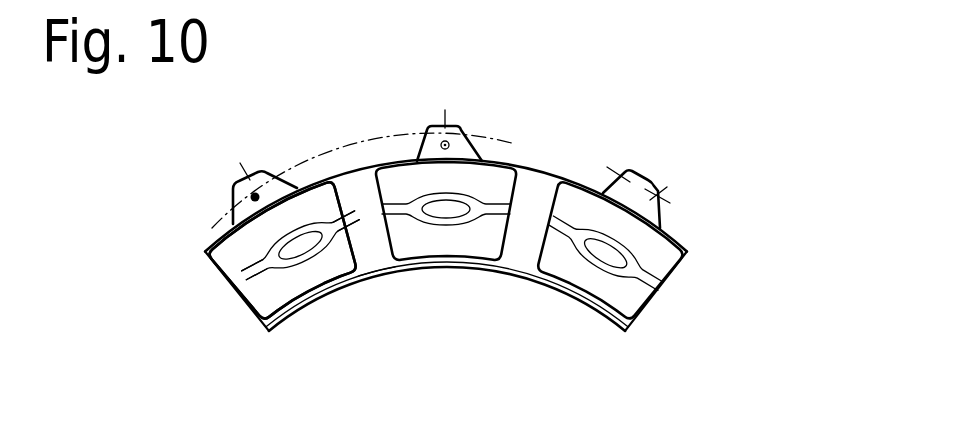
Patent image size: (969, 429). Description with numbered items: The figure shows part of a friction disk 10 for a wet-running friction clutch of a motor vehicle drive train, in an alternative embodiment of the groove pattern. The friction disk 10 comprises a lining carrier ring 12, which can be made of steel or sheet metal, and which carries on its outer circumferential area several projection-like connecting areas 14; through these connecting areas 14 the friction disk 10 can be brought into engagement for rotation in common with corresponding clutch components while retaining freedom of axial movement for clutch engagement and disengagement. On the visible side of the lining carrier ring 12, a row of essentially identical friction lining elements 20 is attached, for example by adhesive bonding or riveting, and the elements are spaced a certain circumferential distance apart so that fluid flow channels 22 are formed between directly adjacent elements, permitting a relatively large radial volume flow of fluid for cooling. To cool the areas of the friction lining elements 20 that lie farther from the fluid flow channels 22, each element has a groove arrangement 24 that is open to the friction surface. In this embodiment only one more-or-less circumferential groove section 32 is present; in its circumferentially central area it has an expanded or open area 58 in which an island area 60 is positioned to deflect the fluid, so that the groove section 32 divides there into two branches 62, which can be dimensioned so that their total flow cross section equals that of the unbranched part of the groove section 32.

The friction disk 10 is at (712, 102).
The lining carrier ring 12 is at (530, 197).
The connecting areas 14 is at (660, 193).
The friction lining elements 20 is at (307, 197).
The fluid flow channels 22 is at (362, 222).
The groove arrangement 24 is at (240, 268).
The circumferential groove section 32 is at (250, 283).
The expanded or open area 58 is at (298, 258).
The island area 60 is at (288, 250).
The branches 62 is at (360, 223).